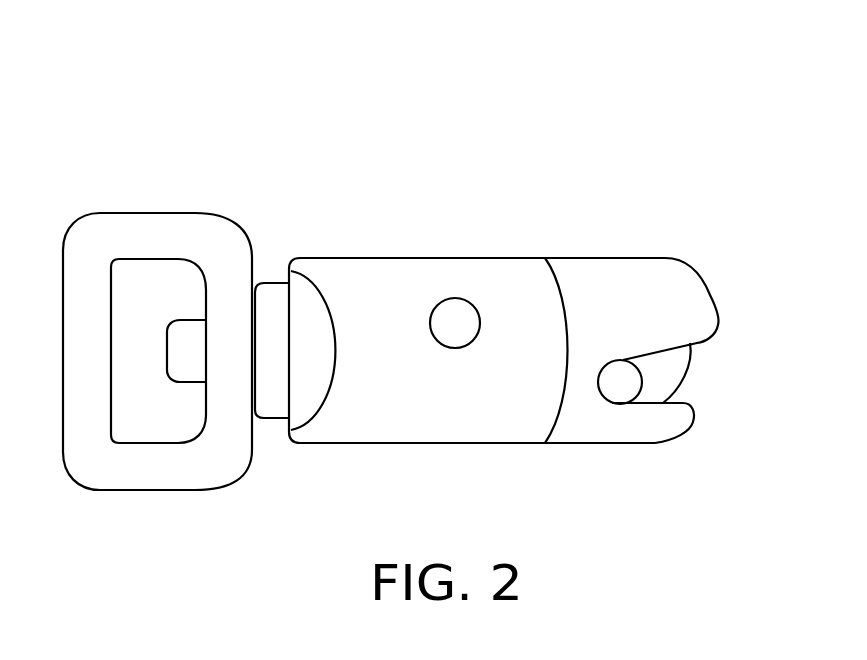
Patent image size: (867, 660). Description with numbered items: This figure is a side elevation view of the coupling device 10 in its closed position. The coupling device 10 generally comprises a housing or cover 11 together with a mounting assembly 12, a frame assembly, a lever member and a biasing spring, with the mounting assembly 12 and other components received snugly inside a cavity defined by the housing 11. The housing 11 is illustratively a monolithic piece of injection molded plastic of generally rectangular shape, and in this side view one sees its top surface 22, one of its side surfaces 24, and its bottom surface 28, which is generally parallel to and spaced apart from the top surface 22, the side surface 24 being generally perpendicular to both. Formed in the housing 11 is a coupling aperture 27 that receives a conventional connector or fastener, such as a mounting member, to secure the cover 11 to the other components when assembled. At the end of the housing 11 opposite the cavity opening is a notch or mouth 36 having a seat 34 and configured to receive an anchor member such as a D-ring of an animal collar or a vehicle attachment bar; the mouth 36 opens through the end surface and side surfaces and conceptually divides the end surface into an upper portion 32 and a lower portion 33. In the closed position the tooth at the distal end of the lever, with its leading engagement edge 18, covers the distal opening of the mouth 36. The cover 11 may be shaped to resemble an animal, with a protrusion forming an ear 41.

The coupling device 10 is at (236, 154).
The housing 11 is at (676, 233).
The mounting assembly 12 is at (128, 522).
The engagement edge 18 is at (678, 372).
The top surface 22 is at (420, 258).
The side surface 24 is at (503, 397).
The coupling aperture 27 is at (457, 313).
The bottom surface 28 is at (478, 443).
The upper portion 32 is at (708, 290).
The lower portion 33 is at (677, 435).
The seat 34 is at (600, 378).
The mouth 36 is at (716, 359).
The ear 41 is at (317, 355).